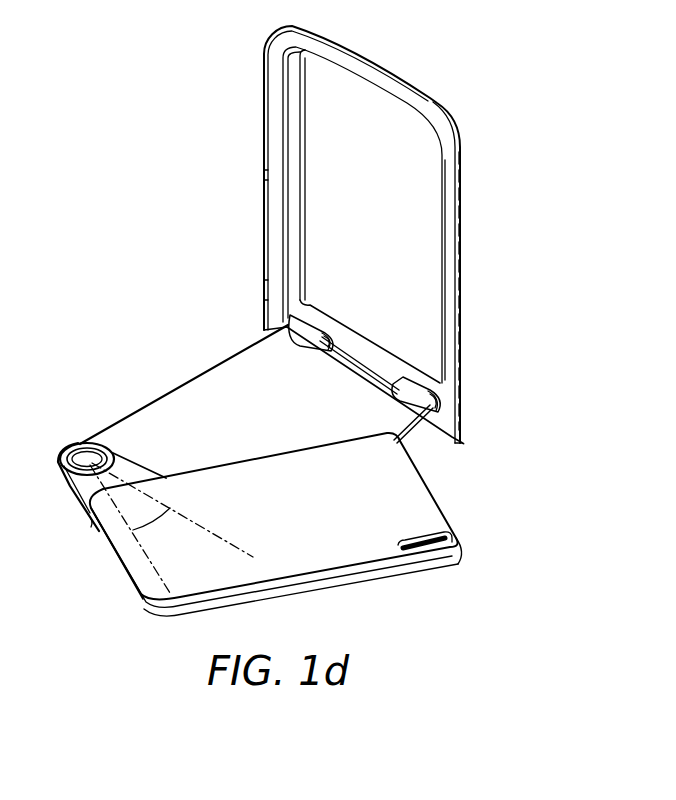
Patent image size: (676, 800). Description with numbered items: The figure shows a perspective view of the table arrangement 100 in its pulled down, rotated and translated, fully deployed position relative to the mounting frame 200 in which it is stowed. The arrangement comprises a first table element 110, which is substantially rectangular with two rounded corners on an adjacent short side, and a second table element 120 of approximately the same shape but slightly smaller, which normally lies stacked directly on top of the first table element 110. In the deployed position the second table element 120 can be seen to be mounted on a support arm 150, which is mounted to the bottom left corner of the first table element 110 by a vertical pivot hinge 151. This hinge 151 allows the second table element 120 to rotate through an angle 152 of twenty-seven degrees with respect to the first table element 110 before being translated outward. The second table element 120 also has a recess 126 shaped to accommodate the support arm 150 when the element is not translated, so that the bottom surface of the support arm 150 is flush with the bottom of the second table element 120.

The table arrangement 100 is at (472, 547).
The first table element 110 is at (200, 388).
The second table element 120 is at (335, 555).
The recess 126 is at (107, 547).
The support arm 150 is at (80, 485).
The vertical pivot hinge 151 is at (77, 446).
The angle 152 is at (157, 518).
The mounting frame 200 is at (448, 183).